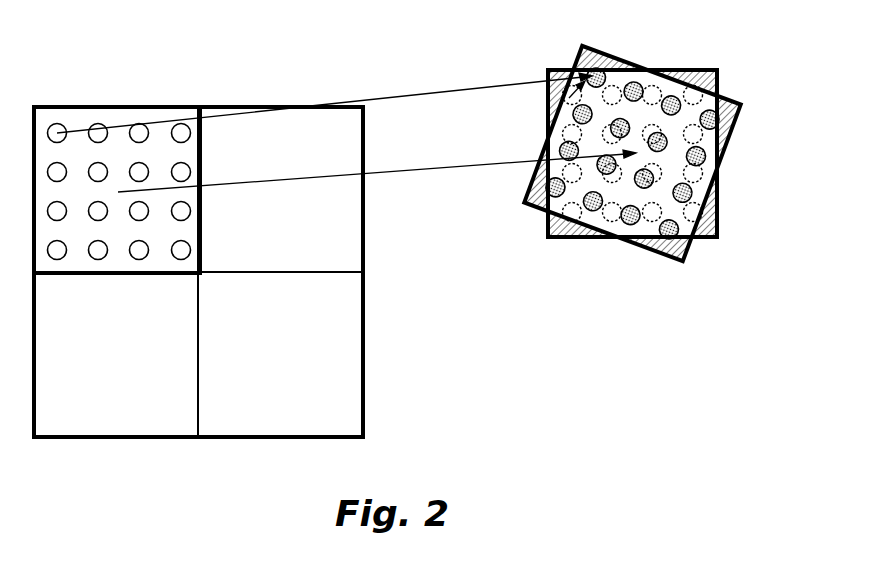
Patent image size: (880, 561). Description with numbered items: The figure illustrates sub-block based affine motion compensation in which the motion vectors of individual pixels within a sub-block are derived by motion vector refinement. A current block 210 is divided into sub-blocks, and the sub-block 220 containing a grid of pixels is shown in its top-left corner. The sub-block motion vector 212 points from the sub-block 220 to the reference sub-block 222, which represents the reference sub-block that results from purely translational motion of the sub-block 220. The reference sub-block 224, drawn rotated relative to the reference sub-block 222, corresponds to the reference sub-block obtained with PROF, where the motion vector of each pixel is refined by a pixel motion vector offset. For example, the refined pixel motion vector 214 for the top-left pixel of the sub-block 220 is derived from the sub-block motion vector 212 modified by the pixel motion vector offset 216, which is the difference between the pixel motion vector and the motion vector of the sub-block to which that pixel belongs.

The macroblock / current block 210 is at (365, 303).
The sub-block motion vector v_SB 212 is at (420, 168).
The refined motion vector v(i,j) 214 is at (440, 87).
The pixel motion vector offset Δv(i,j) 216 is at (574, 64).
The sub-block 220 is at (200, 138).
The reference sub-block 222 is at (719, 86).
The reference sub-block with PROF 224 is at (729, 139).